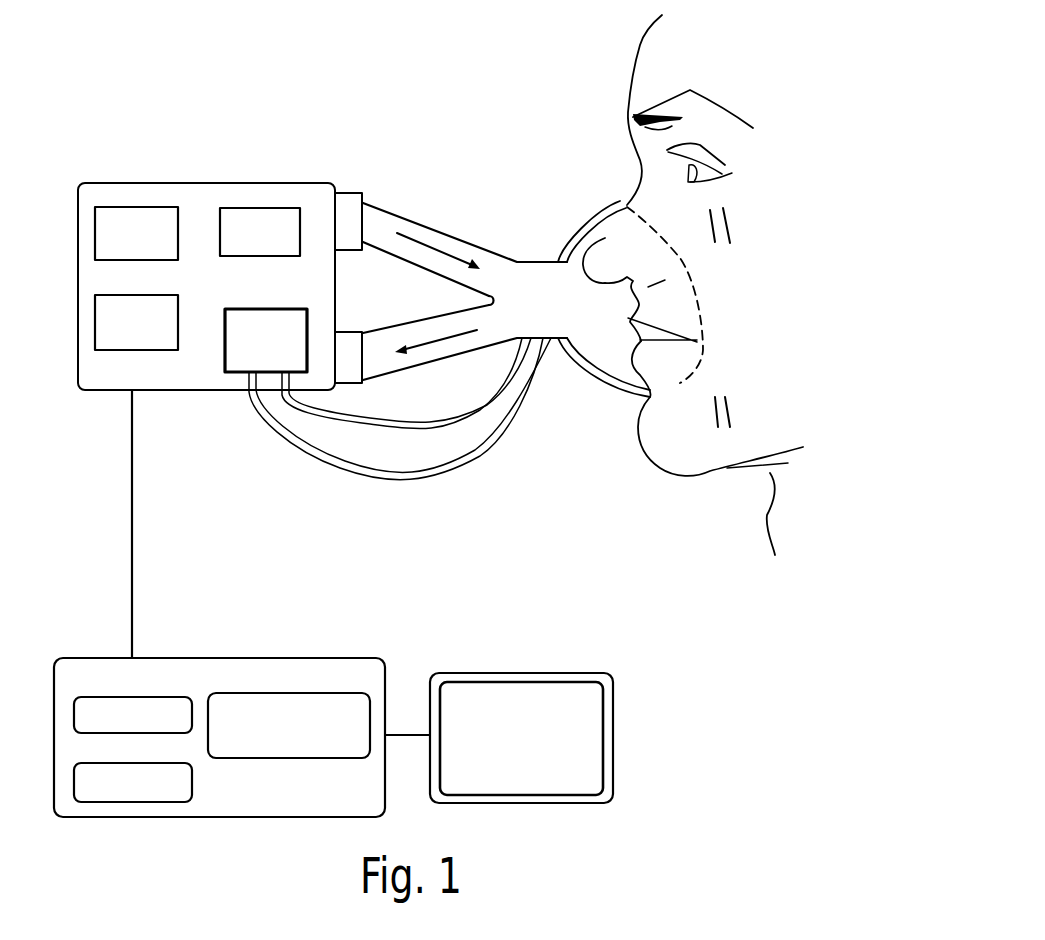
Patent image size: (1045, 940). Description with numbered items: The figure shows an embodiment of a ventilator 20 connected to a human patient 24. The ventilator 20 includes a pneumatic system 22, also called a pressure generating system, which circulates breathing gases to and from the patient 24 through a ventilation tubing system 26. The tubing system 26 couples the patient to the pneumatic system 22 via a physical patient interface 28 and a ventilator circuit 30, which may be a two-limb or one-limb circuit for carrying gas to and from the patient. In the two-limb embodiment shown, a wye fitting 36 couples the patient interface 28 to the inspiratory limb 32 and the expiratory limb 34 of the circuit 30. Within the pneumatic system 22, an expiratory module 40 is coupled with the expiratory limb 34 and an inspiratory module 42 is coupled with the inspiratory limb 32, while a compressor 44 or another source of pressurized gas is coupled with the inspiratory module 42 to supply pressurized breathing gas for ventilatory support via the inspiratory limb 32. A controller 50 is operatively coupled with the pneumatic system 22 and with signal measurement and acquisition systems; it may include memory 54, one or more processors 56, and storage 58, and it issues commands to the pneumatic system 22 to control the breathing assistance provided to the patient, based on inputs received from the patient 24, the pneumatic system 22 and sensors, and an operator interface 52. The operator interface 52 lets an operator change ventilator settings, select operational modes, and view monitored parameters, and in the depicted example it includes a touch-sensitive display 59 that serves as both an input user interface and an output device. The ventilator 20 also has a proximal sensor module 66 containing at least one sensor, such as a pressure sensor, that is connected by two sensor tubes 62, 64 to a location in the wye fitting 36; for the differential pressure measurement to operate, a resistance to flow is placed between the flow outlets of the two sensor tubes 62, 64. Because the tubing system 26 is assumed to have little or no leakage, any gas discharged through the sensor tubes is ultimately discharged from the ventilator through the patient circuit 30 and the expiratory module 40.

The ventilator 20 is at (448, 89).
The pneumatic system 22 is at (202, 184).
The human patient 24 is at (633, 81).
The ventilation tubing system 26 is at (533, 195).
The patient interface 28 is at (590, 225).
The ventilator circuit 30 is at (472, 226).
The inspiratory limb 32 is at (413, 263).
The expiratory limb 34 is at (420, 366).
The wye fitting 36 is at (478, 301).
The expiratory module 40 is at (150, 350).
The inspiratory module 42 is at (150, 260).
The compressor 44 is at (263, 257).
The controller 50 is at (238, 817).
The operator interface 52 is at (648, 837).
The memory 54 is at (130, 733).
The processor 56 is at (317, 758).
The storage 58 is at (192, 782).
The display 59 is at (518, 803).
The sensor tube 62 is at (433, 478).
The sensor tube 64 is at (383, 422).
The proximal sensor module 66 is at (233, 308).